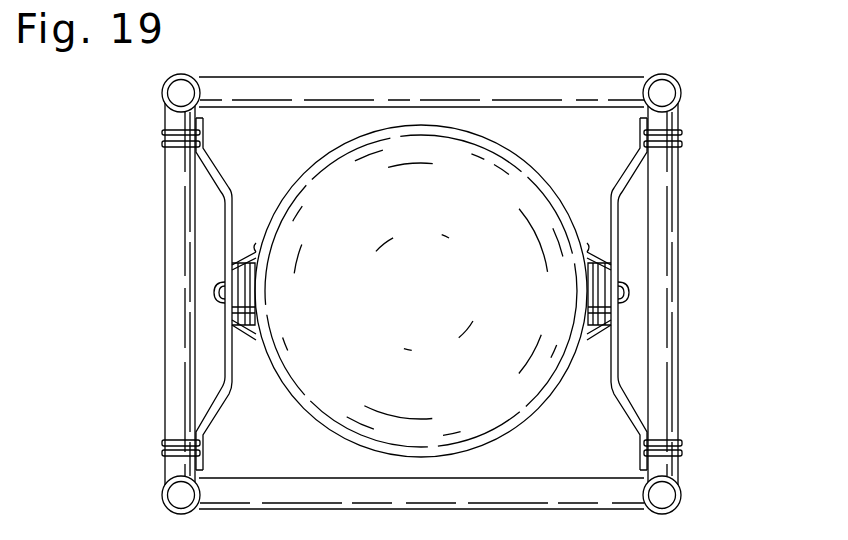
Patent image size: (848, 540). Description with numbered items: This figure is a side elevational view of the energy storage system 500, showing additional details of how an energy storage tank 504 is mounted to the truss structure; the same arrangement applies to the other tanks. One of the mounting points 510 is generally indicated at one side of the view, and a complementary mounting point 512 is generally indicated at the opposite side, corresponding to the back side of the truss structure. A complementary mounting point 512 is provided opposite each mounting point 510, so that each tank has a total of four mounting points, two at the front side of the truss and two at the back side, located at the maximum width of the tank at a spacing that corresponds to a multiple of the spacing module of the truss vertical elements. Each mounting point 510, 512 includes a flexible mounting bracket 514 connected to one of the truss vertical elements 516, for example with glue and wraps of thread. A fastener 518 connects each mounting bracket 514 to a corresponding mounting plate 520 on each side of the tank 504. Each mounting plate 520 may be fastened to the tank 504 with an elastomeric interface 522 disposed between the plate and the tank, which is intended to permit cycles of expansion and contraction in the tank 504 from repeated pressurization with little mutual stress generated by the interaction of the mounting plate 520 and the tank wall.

The system 500 is at (613, 54).
The energy storage tank 504 is at (444, 302).
The mounting point 510 is at (90, 258).
The complementary mounting point 512 is at (778, 241).
The flexible mounting bracket 514 is at (216, 183).
The truss vertical element 516 is at (165, 222).
The fastener 518 is at (214, 294).
The mounting plate 520 is at (257, 244).
The elastomeric interface 522 is at (257, 339).